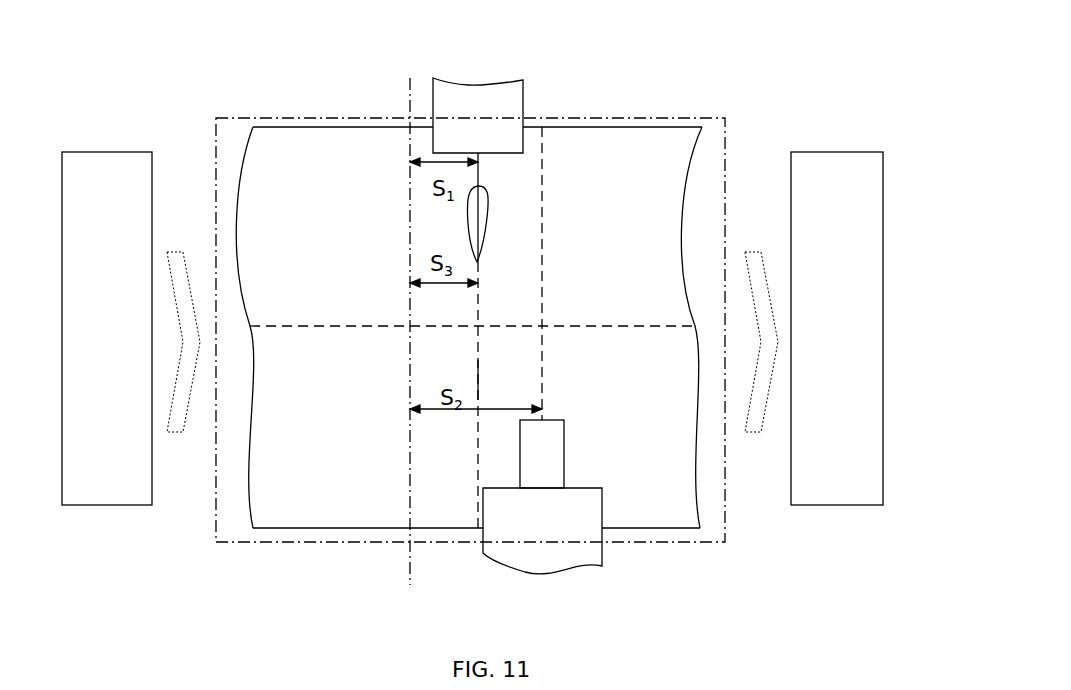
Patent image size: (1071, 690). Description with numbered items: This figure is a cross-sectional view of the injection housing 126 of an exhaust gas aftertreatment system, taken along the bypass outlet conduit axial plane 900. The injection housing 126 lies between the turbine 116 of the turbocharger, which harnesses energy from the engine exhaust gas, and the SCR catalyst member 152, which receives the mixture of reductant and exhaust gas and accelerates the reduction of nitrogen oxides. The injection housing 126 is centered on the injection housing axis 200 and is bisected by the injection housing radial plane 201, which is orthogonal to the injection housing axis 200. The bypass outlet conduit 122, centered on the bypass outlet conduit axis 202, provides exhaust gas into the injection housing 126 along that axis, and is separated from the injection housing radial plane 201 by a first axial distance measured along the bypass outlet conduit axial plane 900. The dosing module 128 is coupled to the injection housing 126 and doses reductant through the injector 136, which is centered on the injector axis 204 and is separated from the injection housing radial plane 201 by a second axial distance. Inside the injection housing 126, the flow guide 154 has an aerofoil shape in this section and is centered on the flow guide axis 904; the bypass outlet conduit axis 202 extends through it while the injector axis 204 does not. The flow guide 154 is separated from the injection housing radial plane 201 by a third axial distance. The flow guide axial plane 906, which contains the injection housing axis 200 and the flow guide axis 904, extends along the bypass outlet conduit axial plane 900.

The turbine 116 is at (113, 151).
The bypass outlet conduit 122 is at (523, 87).
The injection housing 126 is at (565, 126).
The dosing module 128 is at (602, 553).
The injector 136 is at (564, 458).
The SCR catalyst member 152 is at (883, 208).
The flow guide 154 is at (485, 205).
The injection housing axis 200 is at (296, 325).
The injection housing radial plane 201 is at (410, 78).
The bypass outlet conduit axis 202 is at (480, 305).
The injector axis 204 is at (545, 308).
The bypass outlet conduit axial plane 900 is at (320, 118).
The flow guide axis 904 is at (478, 372).
The flow guide axial plane 906 is at (216, 117).